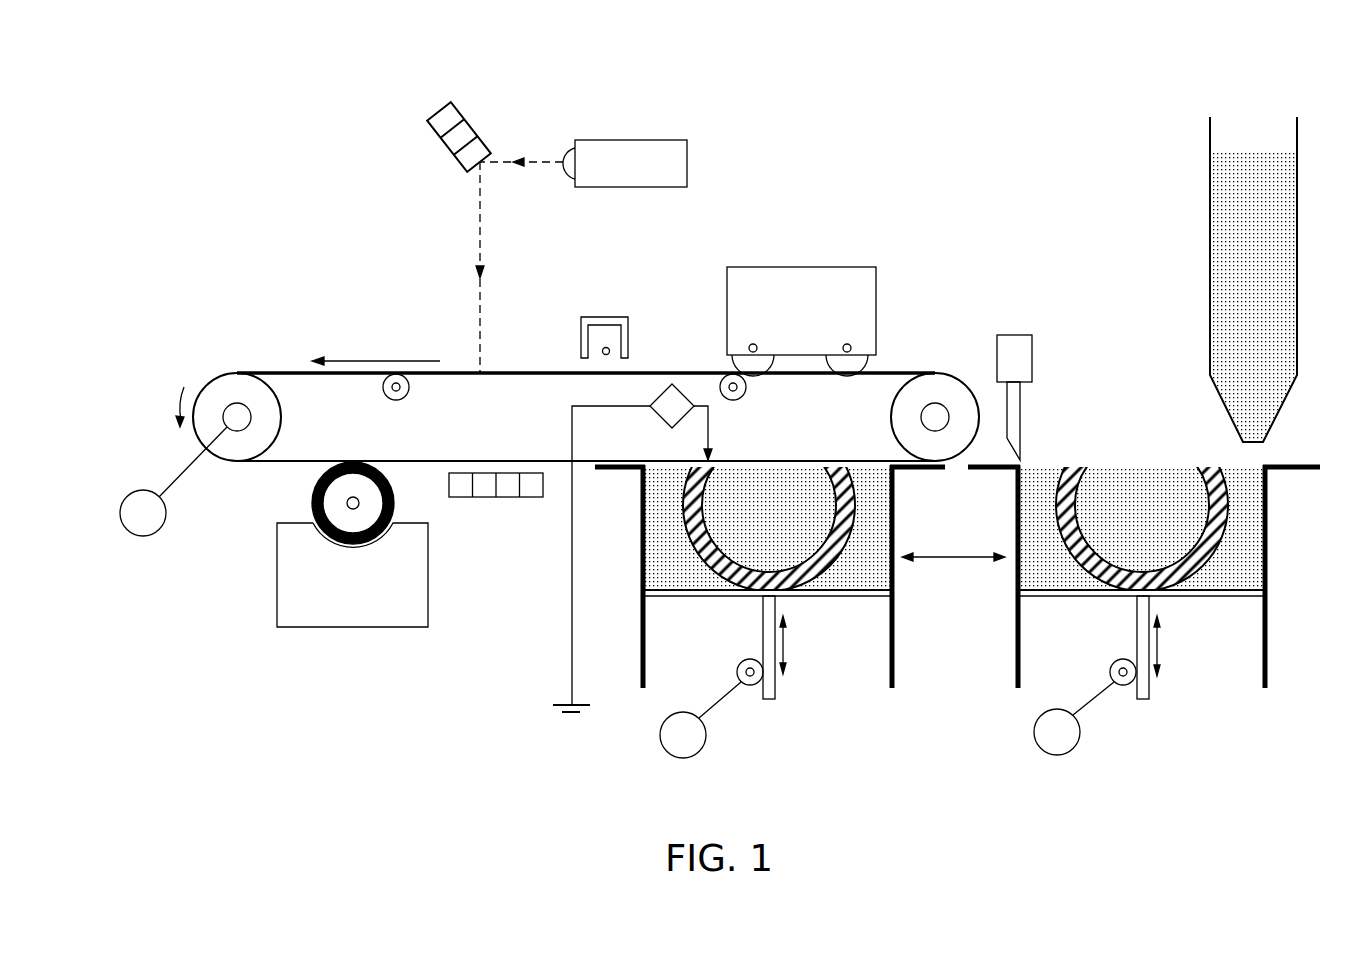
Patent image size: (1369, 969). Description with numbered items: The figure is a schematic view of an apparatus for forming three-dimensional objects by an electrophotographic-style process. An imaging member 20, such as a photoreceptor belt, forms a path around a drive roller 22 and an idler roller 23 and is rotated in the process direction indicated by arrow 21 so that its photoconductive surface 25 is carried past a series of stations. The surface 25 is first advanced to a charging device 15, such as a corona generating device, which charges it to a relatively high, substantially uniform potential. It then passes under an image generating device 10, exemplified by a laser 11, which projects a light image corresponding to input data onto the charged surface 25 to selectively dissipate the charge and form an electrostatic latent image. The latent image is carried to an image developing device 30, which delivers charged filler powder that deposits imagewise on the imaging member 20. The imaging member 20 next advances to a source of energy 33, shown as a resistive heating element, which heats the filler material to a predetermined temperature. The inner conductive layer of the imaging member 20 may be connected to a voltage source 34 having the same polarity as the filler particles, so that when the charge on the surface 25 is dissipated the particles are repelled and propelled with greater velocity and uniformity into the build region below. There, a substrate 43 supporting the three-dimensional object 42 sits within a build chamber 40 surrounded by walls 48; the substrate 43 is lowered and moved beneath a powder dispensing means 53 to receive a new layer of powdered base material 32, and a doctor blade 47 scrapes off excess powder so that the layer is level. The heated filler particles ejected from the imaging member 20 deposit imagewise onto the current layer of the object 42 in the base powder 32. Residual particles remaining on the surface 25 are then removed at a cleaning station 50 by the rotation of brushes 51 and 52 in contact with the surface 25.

The image generating device 10 is at (625, 94).
The laser 11 is at (673, 187).
The charging device 15 is at (601, 317).
The imaging member 20 is at (553, 424).
The arrow 21 is at (381, 360).
The drive roller 22 is at (228, 382).
The idler roller 23 is at (936, 378).
The photoconductive surface 25 is at (297, 371).
The image developing device 30 is at (348, 644).
The powdered base material 32 is at (1283, 383).
The source of energy 33 is at (480, 498).
The voltage source 34 is at (662, 422).
The build chamber 40 is at (957, 624).
The three-dimensional object 42 is at (725, 552).
The substrate 43 is at (730, 596).
The doctor blade 47 is at (1032, 347).
The walls 48 is at (893, 684).
The cleaning station 50 is at (802, 290).
The brush 51 is at (862, 357).
The brush 52 is at (743, 360).
The powder dispensing means 53 is at (1210, 337).